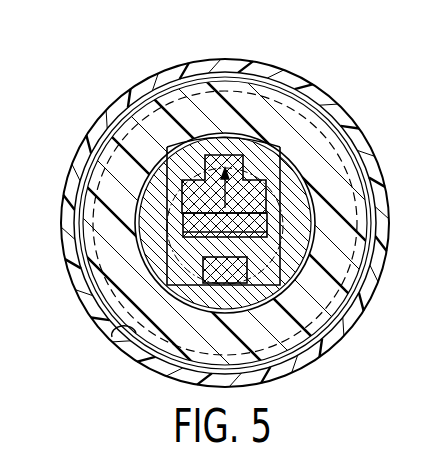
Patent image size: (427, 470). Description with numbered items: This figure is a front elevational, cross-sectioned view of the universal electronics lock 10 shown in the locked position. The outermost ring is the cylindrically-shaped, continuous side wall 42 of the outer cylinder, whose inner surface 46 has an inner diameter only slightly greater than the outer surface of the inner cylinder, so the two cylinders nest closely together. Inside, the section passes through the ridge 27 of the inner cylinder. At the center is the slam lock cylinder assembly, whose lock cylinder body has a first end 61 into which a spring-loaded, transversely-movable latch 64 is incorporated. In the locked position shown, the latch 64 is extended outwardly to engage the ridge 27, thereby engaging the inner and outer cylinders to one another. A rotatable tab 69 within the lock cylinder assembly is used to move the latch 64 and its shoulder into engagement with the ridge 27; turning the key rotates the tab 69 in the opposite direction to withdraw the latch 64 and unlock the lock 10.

The universal electronics lock 10 is at (74, 74).
The side wall 42 is at (226, 68).
The first end 61 is at (342, 295).
The ridge 27 is at (103, 224).
The latch 64 is at (303, 96).
The rotatable tab 69 is at (265, 228).
The inner surface 46 is at (113, 335).